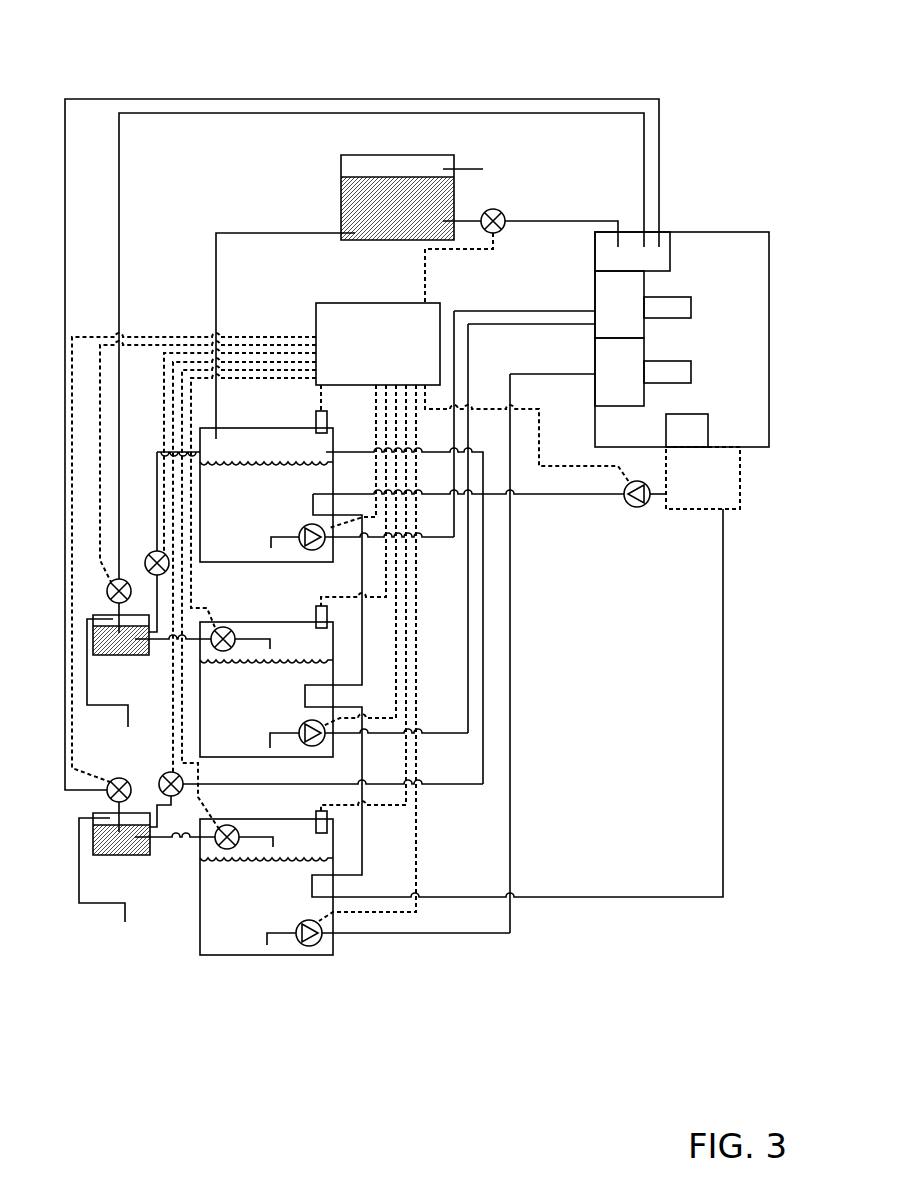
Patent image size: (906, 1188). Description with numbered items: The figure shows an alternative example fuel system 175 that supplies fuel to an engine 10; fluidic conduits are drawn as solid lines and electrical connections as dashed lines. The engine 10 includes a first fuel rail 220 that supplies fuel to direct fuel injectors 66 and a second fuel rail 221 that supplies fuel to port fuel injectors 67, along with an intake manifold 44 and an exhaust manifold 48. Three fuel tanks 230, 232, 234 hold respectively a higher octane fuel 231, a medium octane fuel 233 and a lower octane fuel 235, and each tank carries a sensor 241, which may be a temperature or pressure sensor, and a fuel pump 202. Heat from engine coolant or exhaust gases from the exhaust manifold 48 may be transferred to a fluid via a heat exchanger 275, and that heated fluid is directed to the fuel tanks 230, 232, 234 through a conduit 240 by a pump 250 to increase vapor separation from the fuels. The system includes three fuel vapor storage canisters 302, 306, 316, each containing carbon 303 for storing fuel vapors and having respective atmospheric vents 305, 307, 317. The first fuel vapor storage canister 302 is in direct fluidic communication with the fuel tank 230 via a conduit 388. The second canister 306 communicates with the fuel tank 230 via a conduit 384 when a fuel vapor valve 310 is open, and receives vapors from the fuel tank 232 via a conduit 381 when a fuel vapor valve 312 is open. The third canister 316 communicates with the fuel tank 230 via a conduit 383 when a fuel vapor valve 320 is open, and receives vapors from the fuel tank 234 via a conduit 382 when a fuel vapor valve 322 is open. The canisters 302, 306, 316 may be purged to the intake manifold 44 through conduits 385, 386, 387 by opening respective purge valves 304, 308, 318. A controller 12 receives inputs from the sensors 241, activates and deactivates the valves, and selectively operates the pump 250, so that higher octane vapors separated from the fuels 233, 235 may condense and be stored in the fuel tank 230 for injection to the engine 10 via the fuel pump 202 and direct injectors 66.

The fuel system 175 is at (155, 42).
The engine 10 is at (748, 233).
The intake manifold 44 is at (632, 251).
The first fuel rail 220 is at (619, 304).
The second fuel rail 221 is at (619, 372).
The direct fuel injector 66 is at (667, 307).
The port fuel injector 67 is at (667, 372).
The exhaust manifold 48 is at (687, 430).
The heat exchanger 275 is at (703, 478).
The controller 12 is at (378, 344).
The first fuel vapor storage canister 302 is at (341, 155).
The carbon 303 is at (273, 516).
The purge valve 304 is at (497, 209).
The atmospheric vent 305 is at (460, 175).
The conduit 385 is at (518, 222).
The conduit 386 is at (120, 116).
The conduit 387 is at (65, 102).
The conduit 388 is at (216, 236).
The fuel tank 230 is at (240, 428).
The fuel 231 is at (266, 479).
The fuel tank 232 is at (242, 622).
The fuel 233 is at (266, 678).
The fuel tank 234 is at (198, 957).
The fuel 235 is at (266, 875).
The sensor 241 is at (316, 420).
The fuel pump 202 is at (302, 527).
The conduit 240 is at (548, 494).
The pump 250 is at (626, 500).
The second fuel vapor storage canister 306 is at (110, 656).
The atmospheric vent 307 is at (103, 706).
The purge valve 308 is at (110, 598).
The fuel vapor valve 310 is at (150, 553).
The fuel vapor valve 312 is at (222, 627).
The third fuel vapor storage canister 316 is at (113, 857).
The atmospheric vent 317 is at (90, 903).
The purge valve 318 is at (108, 795).
The fuel vapor valve 320 is at (165, 773).
The fuel vapor valve 322 is at (229, 825).
The conduit 381 is at (270, 646).
The conduit 382 is at (273, 845).
The conduit 383 is at (430, 785).
The conduit 384 is at (156, 460).